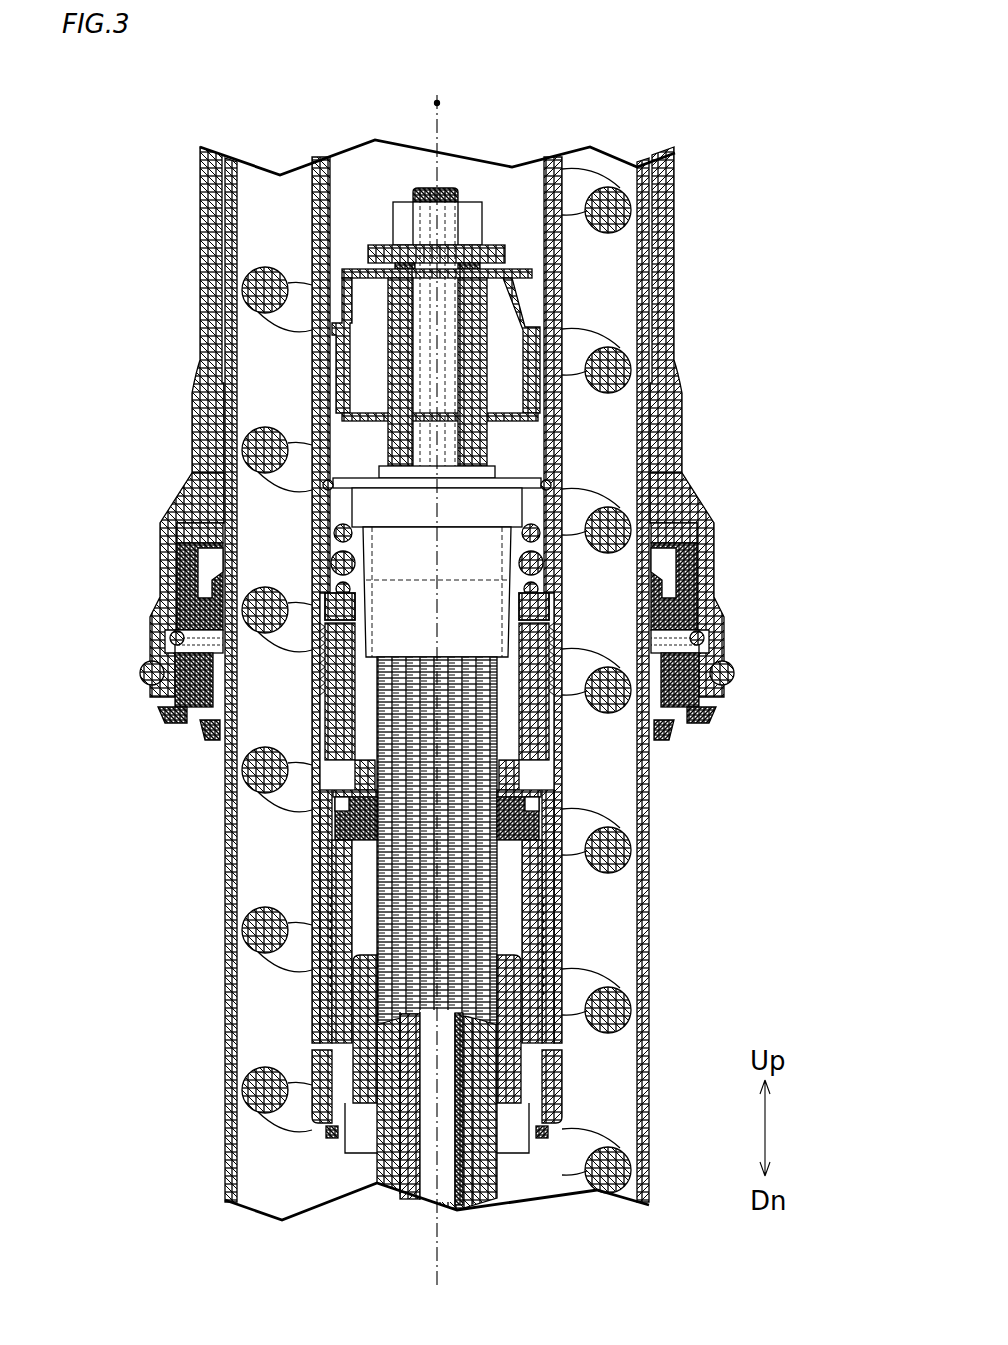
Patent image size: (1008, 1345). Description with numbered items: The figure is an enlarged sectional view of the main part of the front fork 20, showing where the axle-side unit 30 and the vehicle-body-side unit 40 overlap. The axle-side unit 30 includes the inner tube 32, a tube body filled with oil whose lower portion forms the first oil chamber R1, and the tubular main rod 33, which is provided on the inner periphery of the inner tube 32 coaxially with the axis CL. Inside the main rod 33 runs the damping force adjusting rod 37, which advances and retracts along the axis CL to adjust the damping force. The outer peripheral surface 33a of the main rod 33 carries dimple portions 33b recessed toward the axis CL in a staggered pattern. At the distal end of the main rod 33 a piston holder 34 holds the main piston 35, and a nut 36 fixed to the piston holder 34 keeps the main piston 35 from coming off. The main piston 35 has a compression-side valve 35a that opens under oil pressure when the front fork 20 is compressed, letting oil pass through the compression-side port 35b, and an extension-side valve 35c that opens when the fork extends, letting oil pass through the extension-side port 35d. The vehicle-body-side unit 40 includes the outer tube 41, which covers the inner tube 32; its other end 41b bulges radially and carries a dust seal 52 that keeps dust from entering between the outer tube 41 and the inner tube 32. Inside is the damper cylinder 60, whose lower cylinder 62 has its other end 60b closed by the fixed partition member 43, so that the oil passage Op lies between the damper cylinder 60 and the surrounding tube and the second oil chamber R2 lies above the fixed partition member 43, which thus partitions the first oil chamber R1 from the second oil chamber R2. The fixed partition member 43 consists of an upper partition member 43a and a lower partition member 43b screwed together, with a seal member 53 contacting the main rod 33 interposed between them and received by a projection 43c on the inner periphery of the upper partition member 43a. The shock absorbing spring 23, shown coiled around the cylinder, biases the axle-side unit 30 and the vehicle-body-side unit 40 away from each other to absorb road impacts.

The front fork 20 is at (816, 512).
The shock absorbing spring 23 is at (606, 690).
The axle-side unit 30 is at (668, 781).
The inner tube 32 is at (225, 1150).
The main rod 33 is at (371, 965).
The outer peripheral surface 33a is at (377, 1168).
The dimple portions 33b is at (398, 930).
The piston holder 34 is at (505, 490).
The main piston 35 is at (439, 329).
The compression-side valve 35a is at (520, 420).
The compression-side port 35b is at (502, 315).
The extension-side valve 35c is at (355, 275).
The extension-side port 35d is at (360, 370).
The nut 36 is at (472, 223).
The damping force adjusting rod 37 is at (466, 1197).
The vehicle-body-side unit 40 is at (732, 566).
The outer tube 41 is at (677, 208).
The other end of outer tube 41b is at (142, 680).
The fixed partition member 43 is at (143, 968).
The upper partition member 43a is at (317, 948).
The lower partition member 43b is at (325, 1010).
The projection 43c is at (350, 797).
The dust seal 52 is at (177, 725).
The seal member 53 is at (347, 827).
The damper cylinder 60 is at (527, 639).
The other end of damper cylinder 60b is at (313, 706).
The lower cylinder 62 is at (570, 182).
The axis CL is at (447, 103).
The oil passage Op is at (262, 201).
The first oil chamber R1 is at (545, 1184).
The second oil chamber R2 is at (388, 172).